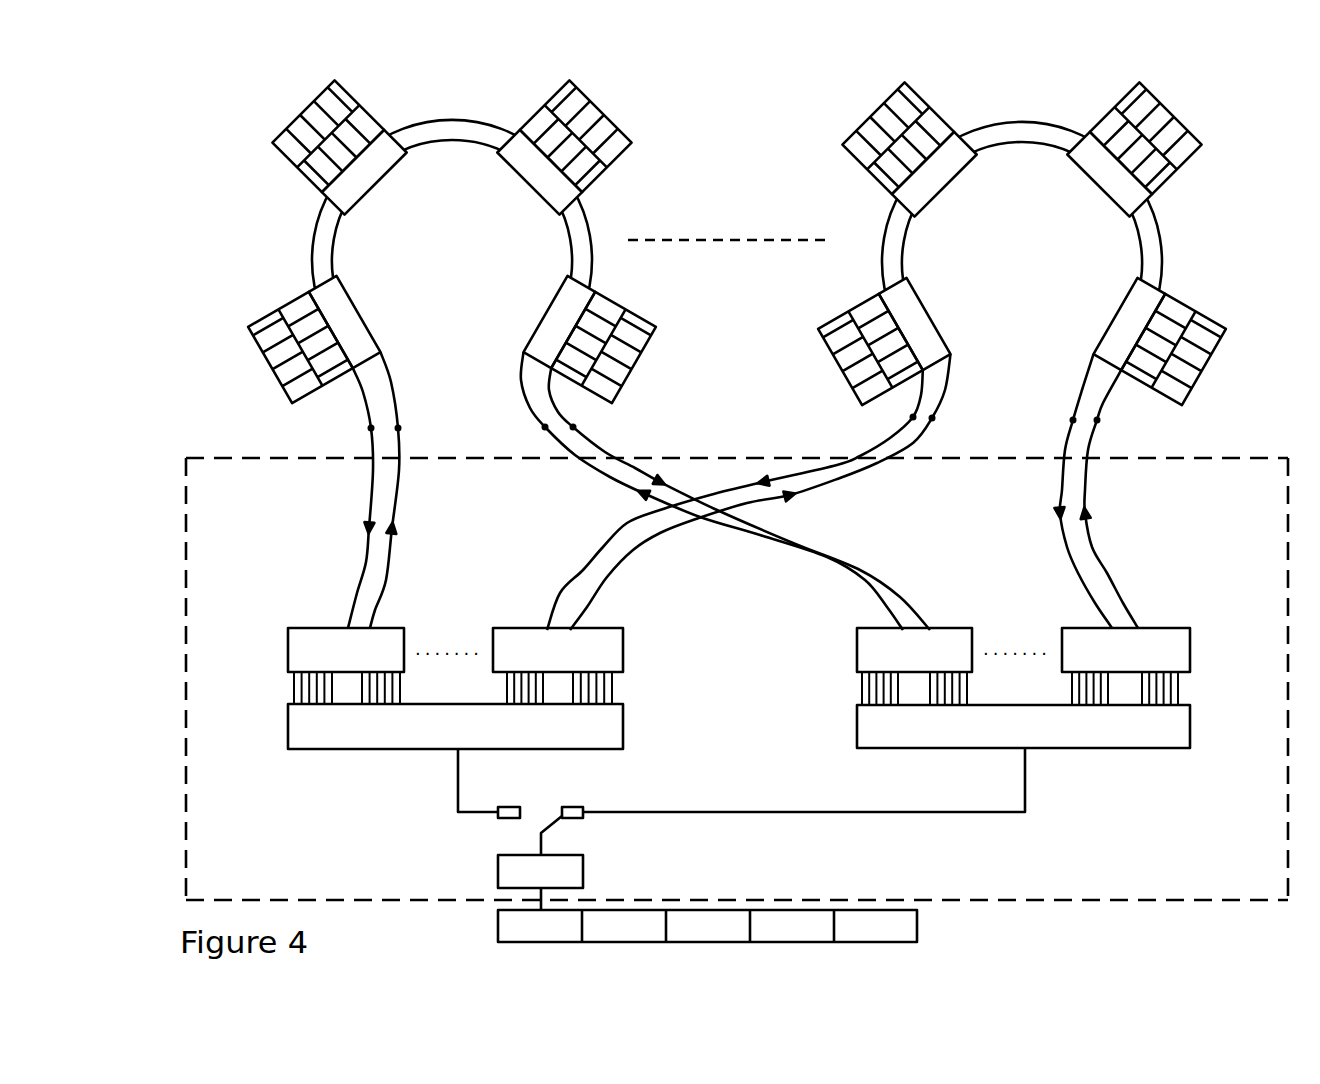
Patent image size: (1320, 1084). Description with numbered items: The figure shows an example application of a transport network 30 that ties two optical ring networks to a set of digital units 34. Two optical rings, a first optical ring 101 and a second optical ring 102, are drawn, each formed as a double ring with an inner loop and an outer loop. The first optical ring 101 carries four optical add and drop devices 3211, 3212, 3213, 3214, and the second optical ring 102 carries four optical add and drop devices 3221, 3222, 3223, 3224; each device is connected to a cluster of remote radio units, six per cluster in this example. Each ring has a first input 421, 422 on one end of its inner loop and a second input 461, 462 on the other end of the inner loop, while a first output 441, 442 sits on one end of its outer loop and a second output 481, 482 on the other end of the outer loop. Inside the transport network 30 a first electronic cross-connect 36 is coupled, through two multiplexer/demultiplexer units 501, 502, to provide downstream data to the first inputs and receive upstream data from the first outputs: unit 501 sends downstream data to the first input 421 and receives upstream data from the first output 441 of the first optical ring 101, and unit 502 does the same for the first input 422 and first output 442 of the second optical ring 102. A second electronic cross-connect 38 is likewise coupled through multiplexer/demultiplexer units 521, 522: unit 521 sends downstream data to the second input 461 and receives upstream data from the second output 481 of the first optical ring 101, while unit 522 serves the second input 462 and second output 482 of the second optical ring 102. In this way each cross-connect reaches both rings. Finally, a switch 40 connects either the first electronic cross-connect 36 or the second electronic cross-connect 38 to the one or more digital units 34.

The first optical ring 101 is at (450, 115).
The second optical ring 102 is at (1020, 117).
The optical add and drop device 3211 is at (311, 298).
The optical add and drop device 3212 is at (320, 189).
The optical add and drop device 3213 is at (583, 188).
The optical add and drop device 3214 is at (600, 300).
The optical add and drop device 3221 is at (881, 300).
The optical add and drop device 3222 is at (890, 191).
The optical add and drop device 3223 is at (1153, 190).
The optical add and drop device 3224 is at (1170, 302).
The first output 441 is at (371, 428).
The first input 421 is at (398, 428).
The second input 461 is at (545, 427).
The second output 481 is at (573, 427).
The first output 442 is at (913, 418).
The first input 422 is at (932, 418).
The second input 462 is at (1073, 420).
The second output 482 is at (1097, 420).
The transport network 30 is at (186, 500).
The multiplexer/demultiplexer unit 501 is at (288, 650).
The multiplexer/demultiplexer unit 502 is at (626, 650).
The multiplexer/demultiplexer unit 521 is at (857, 652).
The multiplexer/demultiplexer unit 522 is at (1192, 652).
The first electronic cross-connect 36 is at (288, 728).
The second electronic cross-connect 38 is at (857, 728).
The switch 40 is at (498, 872).
The digital units 34 is at (918, 923).